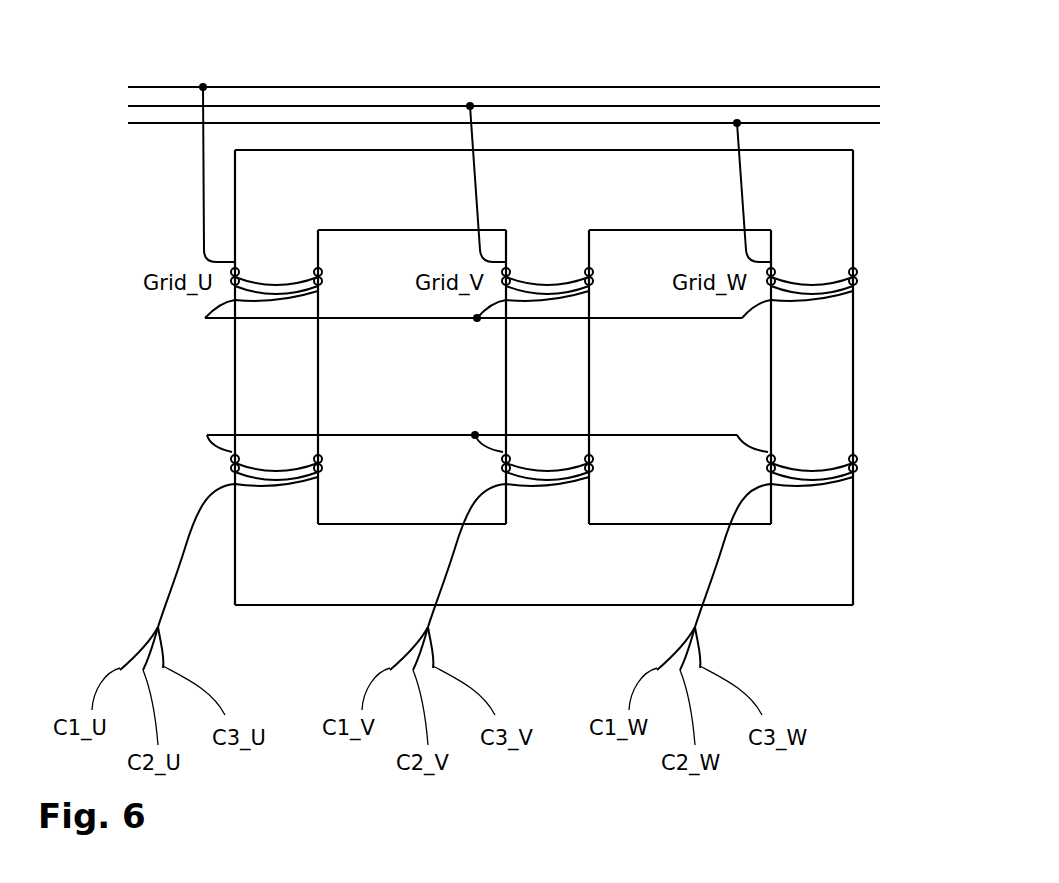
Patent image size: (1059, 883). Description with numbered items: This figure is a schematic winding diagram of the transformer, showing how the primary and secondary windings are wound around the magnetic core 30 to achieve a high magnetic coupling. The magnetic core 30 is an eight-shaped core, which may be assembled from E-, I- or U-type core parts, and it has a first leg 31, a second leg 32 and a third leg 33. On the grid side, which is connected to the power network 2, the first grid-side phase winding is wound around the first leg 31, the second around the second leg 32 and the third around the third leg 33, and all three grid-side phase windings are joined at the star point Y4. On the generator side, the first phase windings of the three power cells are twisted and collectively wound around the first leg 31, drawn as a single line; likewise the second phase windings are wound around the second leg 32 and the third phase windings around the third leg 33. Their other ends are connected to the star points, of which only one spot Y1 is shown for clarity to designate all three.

The power network 2 is at (145, 78).
The magnetic core 30 is at (240, 199).
The first leg 31 is at (247, 370).
The second leg 32 is at (578, 370).
The third leg 33 is at (792, 370).
The star point Y4 is at (477, 318).
The star point Y1 is at (475, 435).